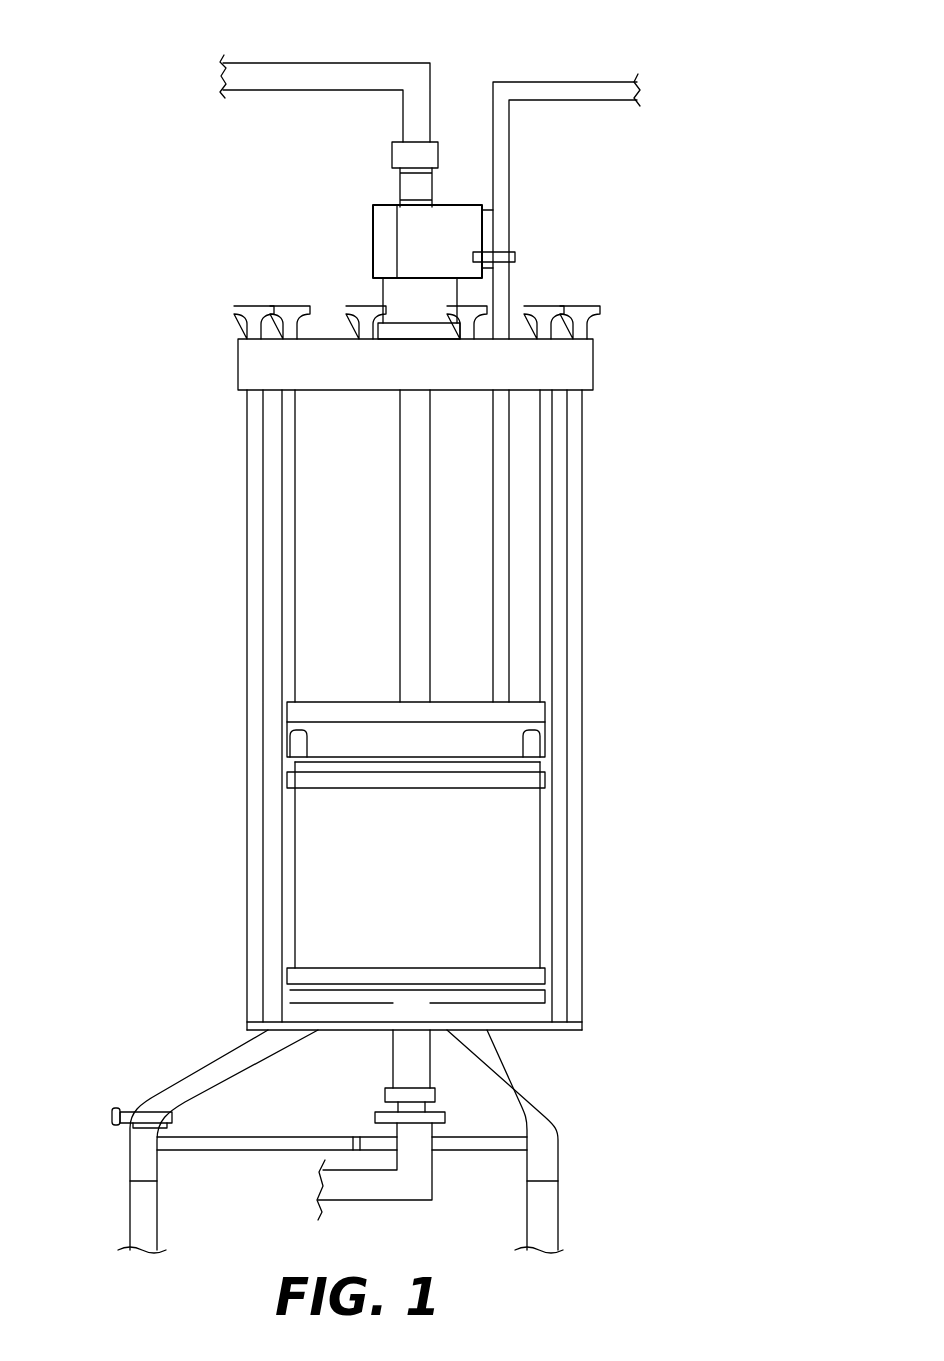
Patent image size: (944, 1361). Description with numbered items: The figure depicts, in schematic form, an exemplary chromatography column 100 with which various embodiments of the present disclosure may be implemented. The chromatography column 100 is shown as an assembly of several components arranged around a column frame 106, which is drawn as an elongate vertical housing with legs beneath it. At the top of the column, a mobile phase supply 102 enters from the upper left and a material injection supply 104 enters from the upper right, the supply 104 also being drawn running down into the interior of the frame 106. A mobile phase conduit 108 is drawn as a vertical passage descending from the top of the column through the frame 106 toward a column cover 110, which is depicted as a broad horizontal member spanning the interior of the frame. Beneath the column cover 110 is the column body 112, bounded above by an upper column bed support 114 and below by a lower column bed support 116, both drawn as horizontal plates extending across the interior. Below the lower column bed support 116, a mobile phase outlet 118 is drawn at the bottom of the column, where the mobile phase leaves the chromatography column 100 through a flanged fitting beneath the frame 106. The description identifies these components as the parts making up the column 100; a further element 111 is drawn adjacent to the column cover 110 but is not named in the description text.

The chromatography column 100 is at (695, 190).
The mobile phase supply 102 is at (312, 62).
The material injection supply 104 is at (578, 80).
The column frame 106 is at (581, 583).
The mobile phase conduit 108 is at (400, 508).
The column cover 110 is at (323, 740).
The seal 111 is at (540, 747).
The column body 112 is at (431, 882).
The upper column bed support 114 is at (546, 778).
The lower column bed support 116 is at (523, 968).
The mobile phase outlet 118 is at (373, 1117).